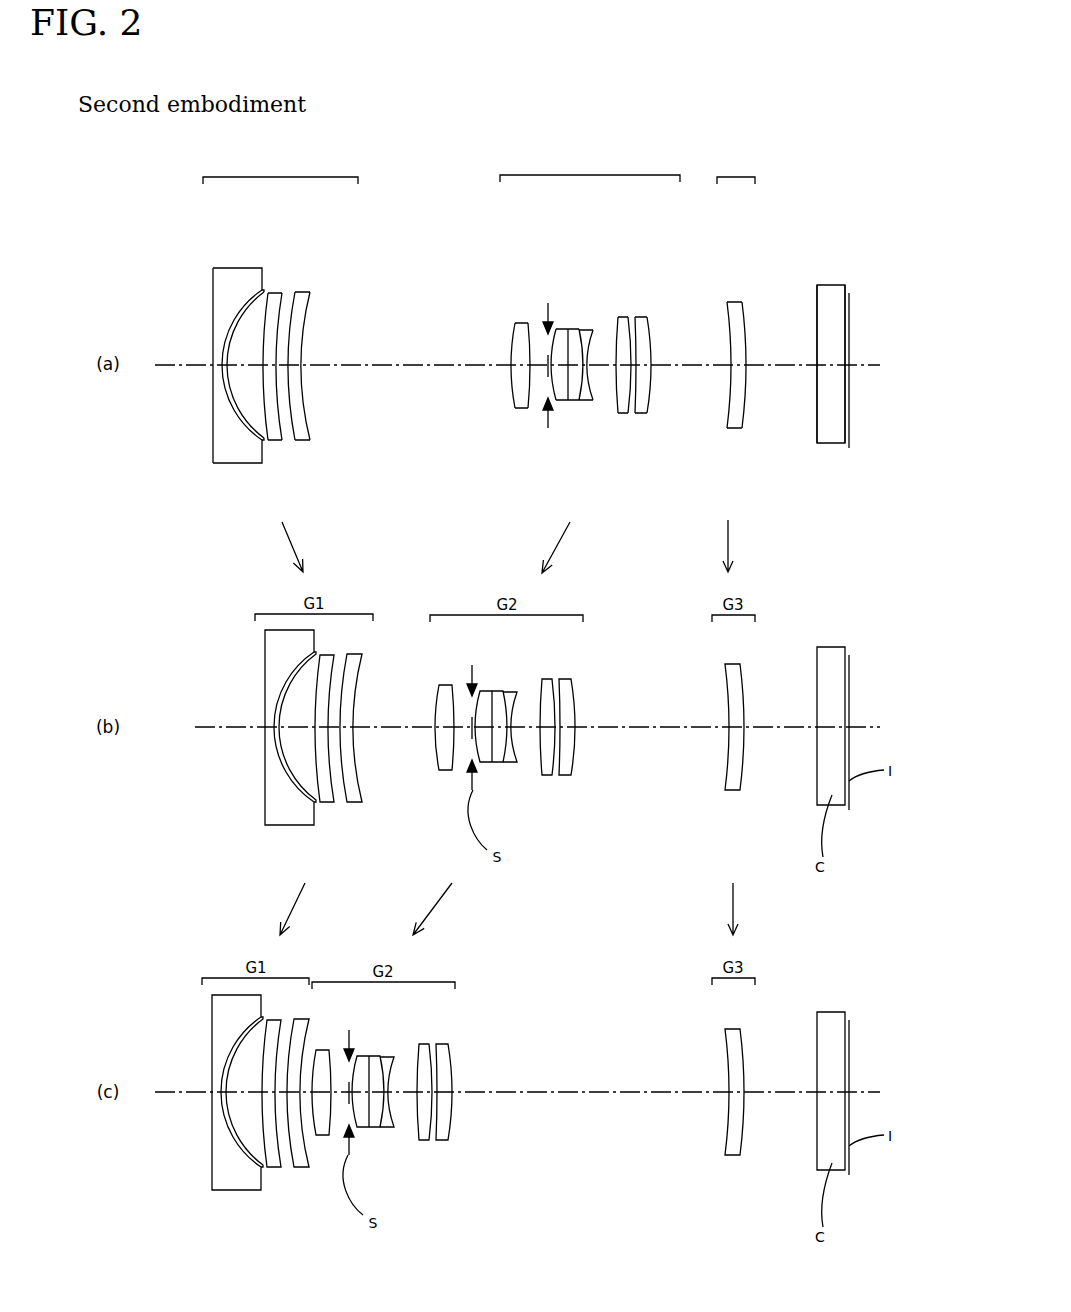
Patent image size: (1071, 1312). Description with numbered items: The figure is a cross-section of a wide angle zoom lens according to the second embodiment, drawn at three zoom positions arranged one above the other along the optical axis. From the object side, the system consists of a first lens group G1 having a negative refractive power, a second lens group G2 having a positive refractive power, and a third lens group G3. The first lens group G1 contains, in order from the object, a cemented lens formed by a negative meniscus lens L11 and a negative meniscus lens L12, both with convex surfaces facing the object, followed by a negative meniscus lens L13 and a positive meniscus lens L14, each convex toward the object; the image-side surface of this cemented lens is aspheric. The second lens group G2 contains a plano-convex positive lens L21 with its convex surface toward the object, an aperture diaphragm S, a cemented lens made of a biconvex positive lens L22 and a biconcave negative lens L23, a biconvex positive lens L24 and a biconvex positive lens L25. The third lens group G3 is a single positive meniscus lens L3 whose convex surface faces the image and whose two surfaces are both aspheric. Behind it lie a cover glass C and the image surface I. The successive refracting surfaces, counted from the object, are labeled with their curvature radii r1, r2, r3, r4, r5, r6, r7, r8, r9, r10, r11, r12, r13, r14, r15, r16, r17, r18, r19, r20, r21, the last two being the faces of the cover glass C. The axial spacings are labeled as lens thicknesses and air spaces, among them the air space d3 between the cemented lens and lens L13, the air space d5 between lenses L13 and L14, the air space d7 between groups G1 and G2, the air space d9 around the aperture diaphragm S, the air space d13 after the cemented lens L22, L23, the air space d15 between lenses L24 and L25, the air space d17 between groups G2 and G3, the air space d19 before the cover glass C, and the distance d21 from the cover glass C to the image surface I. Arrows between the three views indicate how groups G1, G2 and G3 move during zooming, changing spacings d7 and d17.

The first lens group G1 is at (272, 333).
The second lens group G2 is at (590, 327).
The third lens group G3 is at (733, 312).
The negative meniscus lens L11 is at (224, 347).
The negative meniscus lens L12 is at (252, 345).
The negative meniscus lens L13 is at (292, 348).
The positive meniscus lens L14 is at (322, 343).
The plano-convex positive lens L21 is at (514, 323).
The biconvex positive lens L22 is at (557, 340).
The biconcave negative lens L23 is at (597, 327).
The biconvex positive lens L24 is at (628, 327).
The biconvex positive lens L25 is at (660, 327).
The positive meniscus lens L3 is at (733, 327).
The aperture diaphragm S is at (548, 428).
The cover glass C is at (826, 374).
The image surface I is at (849, 397).
The curvature radius of lens surface r1 is at (213, 295).
The curvature radius of lens surface r2 is at (247, 298).
The curvature radius of lens surface r3 is at (273, 293).
The curvature radius of lens surface r4 is at (268, 307).
The curvature radius of lens surface r5 is at (281, 307).
The curvature radius of lens surface r6 is at (294, 307).
The curvature radius of lens surface r7 is at (310, 307).
The curvature radius of lens surface r8 is at (512, 330).
The curvature radius of lens surface r9 is at (527, 325).
The curvature radius of lens surface r10 is at (553, 337).
The curvature radius of lens surface r11 is at (568, 332).
The curvature radius of lens surface r12 is at (580, 327).
The curvature radius of lens surface r13 is at (592, 332).
The curvature radius of lens surface r14 is at (618, 322).
The curvature radius of lens surface r15 is at (628, 322).
The curvature radius of lens surface r16 is at (636, 322).
The curvature radius of lens surface r17 is at (647, 323).
The curvature radius of lens surface r18 is at (727, 317).
The curvature radius of lens surface r19 is at (742, 317).
The curvature radius of lens surface r20 is at (817, 302).
The curvature radius of lens surface r21 is at (845, 287).
The air space d3 is at (242, 380).
The air space d5 is at (292, 440).
The air space d7 is at (420, 380).
The air space d9 is at (533, 372).
The air space d13 is at (607, 370).
The air space d15 is at (628, 413).
The air space d17 is at (685, 377).
The air space d19 is at (785, 377).
The air space d21 is at (849, 445).